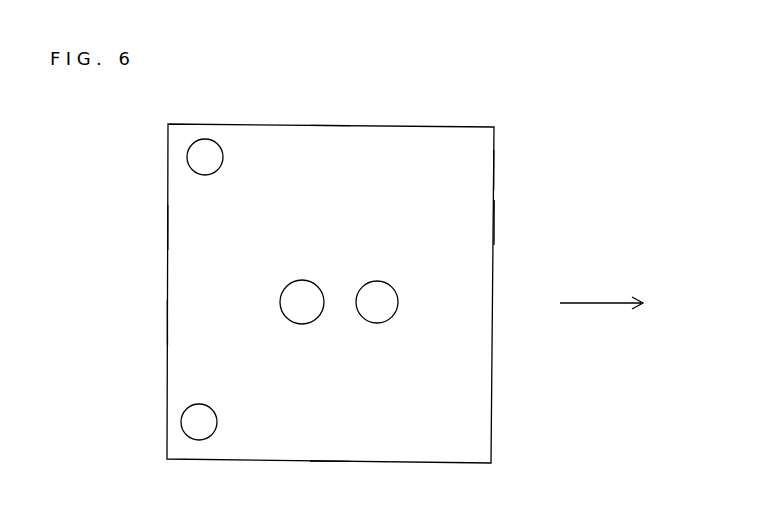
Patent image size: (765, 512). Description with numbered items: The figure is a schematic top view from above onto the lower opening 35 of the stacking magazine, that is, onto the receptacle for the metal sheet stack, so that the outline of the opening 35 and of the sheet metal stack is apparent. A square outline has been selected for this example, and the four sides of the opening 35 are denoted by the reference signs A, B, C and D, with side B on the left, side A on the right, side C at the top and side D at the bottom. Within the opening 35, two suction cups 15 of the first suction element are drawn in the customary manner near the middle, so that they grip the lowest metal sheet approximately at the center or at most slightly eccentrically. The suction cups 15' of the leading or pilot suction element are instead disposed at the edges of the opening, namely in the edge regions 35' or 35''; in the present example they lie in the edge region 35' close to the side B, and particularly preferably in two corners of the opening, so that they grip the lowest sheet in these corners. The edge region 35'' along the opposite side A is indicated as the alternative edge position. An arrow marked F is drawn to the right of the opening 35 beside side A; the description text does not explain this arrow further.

The opening 35 is at (330, 293).
The edge region 35' is at (137, 322).
The edge region 35'' is at (524, 170).
The suction cups 15 is at (339, 282).
The suction cups 15' is at (164, 289).
The side A is at (494, 222).
The side B is at (168, 226).
The side C is at (329, 125).
The side D is at (332, 461).
The direction of movement F is at (601, 284).